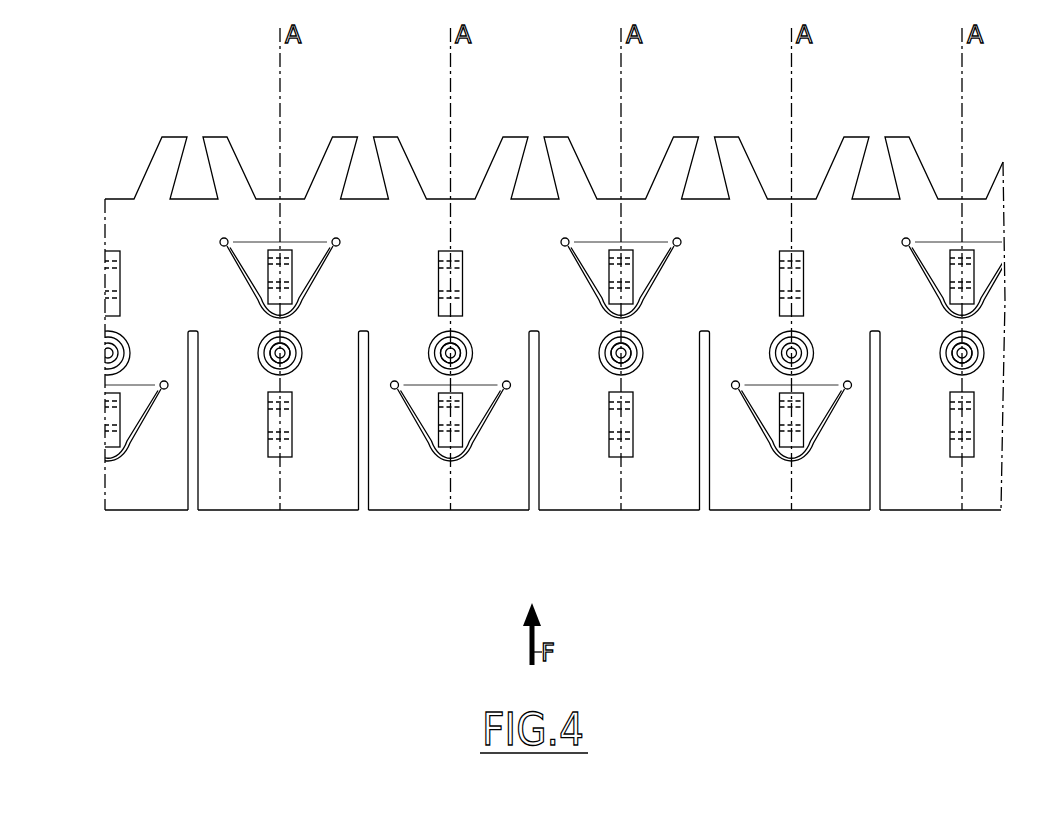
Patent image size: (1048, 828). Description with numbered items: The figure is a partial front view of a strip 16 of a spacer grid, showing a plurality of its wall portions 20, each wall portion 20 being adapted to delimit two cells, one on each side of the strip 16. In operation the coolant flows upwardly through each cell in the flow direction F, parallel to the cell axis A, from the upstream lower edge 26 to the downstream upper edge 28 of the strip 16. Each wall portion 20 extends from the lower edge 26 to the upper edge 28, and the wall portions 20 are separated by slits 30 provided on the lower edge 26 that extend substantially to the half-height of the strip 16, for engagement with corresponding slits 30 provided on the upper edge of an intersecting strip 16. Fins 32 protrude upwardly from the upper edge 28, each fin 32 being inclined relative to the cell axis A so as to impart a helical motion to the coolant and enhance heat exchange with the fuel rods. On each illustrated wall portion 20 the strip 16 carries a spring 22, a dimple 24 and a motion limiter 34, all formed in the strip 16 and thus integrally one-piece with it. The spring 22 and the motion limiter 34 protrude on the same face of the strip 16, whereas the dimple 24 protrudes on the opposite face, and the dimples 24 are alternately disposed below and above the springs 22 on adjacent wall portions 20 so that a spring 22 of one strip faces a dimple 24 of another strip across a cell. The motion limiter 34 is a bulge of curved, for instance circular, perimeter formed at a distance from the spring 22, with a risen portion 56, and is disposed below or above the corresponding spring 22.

The strip 16 is at (82, 161).
The wall portion 20 is at (277, 498).
The spring 22 is at (202, 257).
The dimple 24 is at (430, 252).
The lower edge 26 is at (135, 510).
The upper edge 28 is at (190, 199).
The slit 30 is at (193, 496).
The fin 32 is at (345, 137).
The motion limiter 34 is at (255, 342).
The risen portion 56 is at (288, 347).